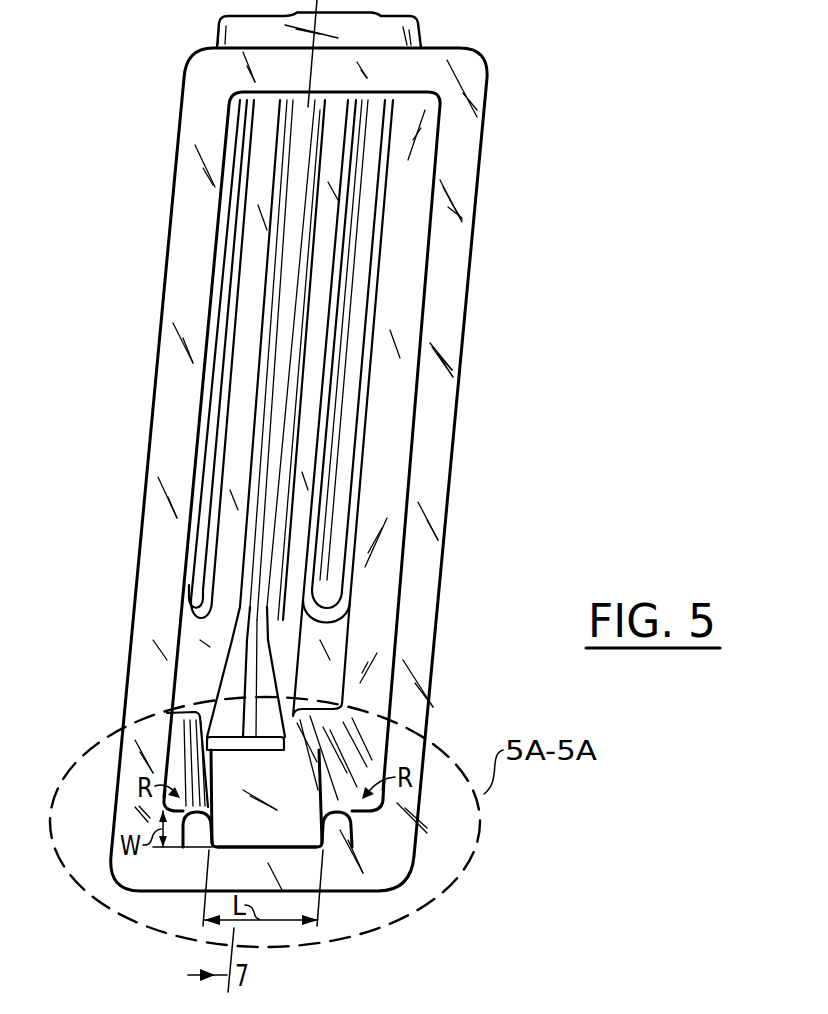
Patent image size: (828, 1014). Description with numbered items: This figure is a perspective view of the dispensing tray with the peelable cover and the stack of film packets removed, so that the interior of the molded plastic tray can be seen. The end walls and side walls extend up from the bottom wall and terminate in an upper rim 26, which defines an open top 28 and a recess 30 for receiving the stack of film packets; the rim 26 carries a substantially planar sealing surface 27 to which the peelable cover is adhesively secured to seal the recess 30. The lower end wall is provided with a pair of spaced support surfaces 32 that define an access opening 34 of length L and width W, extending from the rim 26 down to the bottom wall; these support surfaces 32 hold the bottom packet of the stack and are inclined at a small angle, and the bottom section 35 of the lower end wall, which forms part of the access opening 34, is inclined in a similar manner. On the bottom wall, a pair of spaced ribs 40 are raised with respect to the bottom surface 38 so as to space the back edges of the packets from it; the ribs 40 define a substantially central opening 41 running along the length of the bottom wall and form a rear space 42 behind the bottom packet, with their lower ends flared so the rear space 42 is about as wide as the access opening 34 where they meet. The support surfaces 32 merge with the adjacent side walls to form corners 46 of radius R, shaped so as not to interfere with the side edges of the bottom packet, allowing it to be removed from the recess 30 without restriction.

The upper rim 26 is at (470, 268).
The sealing surface 27 is at (443, 338).
The open top 28 is at (408, 179).
The recess 30 is at (360, 274).
The support surfaces 32 is at (180, 840).
The access opening 34 is at (266, 835).
The bottom section 35 is at (285, 843).
The surface of the bottom wall 38 is at (287, 335).
The ribs 40 is at (214, 694).
The central opening 41 is at (257, 420).
The rear space 42 is at (262, 741).
The corners 46 is at (168, 805).